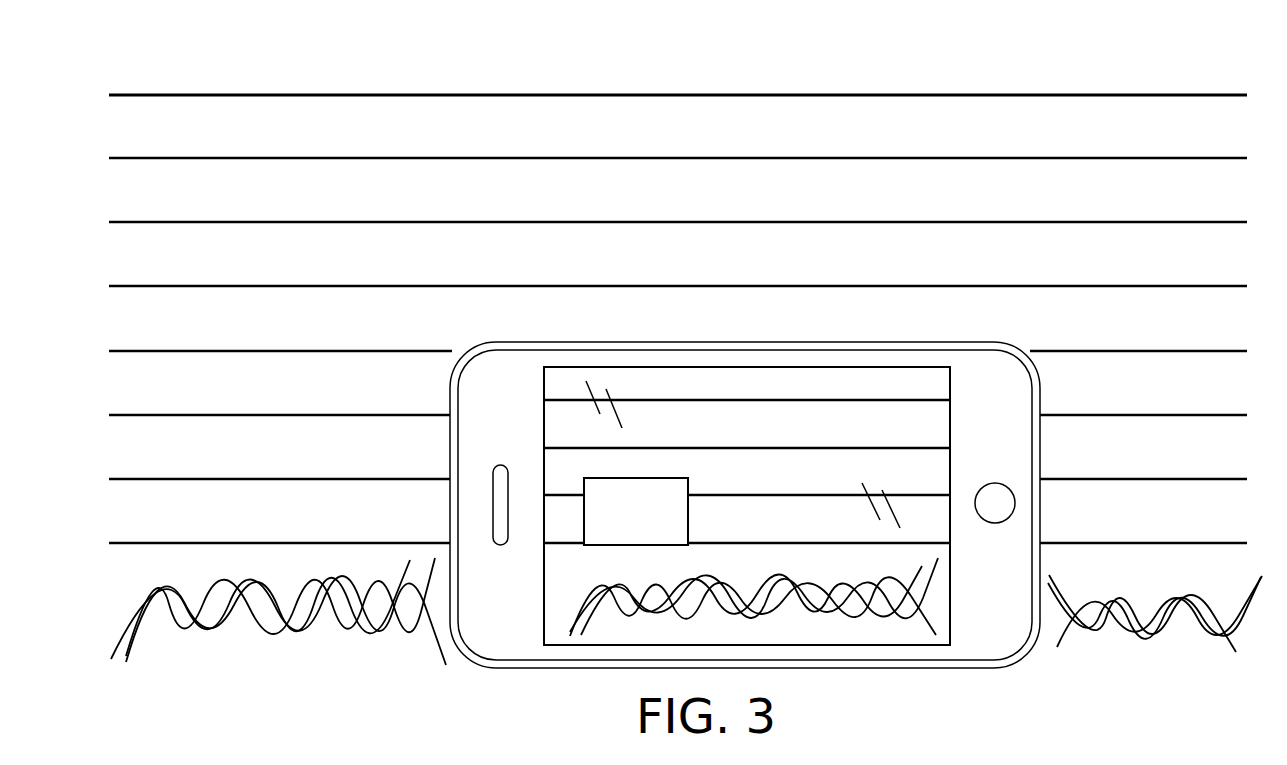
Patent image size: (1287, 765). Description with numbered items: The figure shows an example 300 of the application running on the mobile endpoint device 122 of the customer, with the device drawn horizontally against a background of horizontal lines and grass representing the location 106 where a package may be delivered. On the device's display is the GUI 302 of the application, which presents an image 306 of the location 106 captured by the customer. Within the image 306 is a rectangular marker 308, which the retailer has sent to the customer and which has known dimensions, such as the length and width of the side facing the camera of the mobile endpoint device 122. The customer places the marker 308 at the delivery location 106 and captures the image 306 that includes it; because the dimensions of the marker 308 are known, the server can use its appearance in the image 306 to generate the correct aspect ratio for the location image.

The example 300 is at (685, 337).
The location 106 is at (750, 90).
The mobile endpoint device 122 is at (1027, 351).
The GUI 302 is at (747, 448).
The image 306 is at (650, 380).
The marker 308 is at (690, 484).